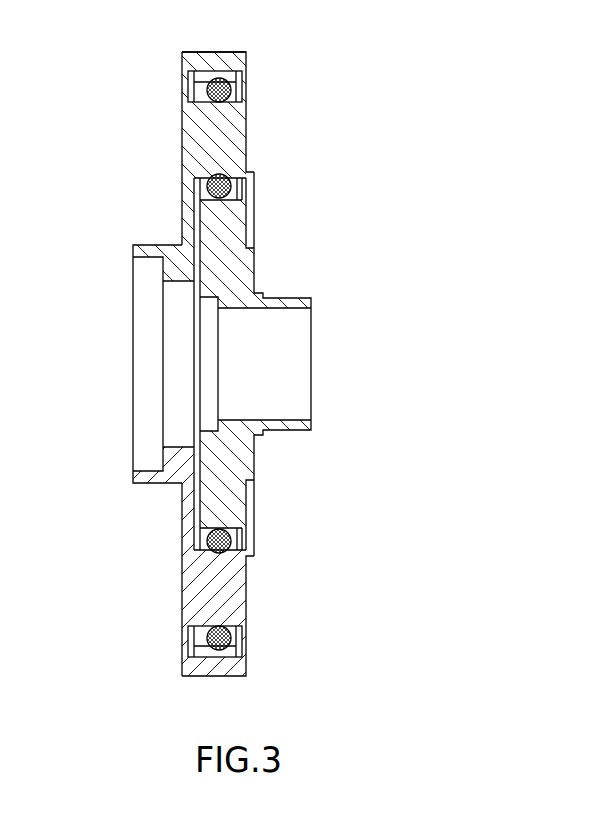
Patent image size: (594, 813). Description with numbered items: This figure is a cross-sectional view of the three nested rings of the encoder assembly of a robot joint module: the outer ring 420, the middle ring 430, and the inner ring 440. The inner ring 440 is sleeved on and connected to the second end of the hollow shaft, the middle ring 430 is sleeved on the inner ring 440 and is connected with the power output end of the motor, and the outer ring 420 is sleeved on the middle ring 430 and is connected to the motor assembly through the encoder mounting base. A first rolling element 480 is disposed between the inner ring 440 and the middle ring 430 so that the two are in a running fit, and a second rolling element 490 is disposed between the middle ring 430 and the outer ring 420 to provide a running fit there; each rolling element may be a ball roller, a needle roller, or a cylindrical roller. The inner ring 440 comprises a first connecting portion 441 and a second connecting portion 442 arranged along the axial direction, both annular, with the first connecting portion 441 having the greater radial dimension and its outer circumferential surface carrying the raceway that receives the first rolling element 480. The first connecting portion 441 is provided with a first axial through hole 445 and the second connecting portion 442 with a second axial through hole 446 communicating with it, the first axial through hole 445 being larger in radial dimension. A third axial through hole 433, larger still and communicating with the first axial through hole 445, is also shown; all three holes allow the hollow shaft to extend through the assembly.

The outer ring 420 is at (182, 67).
The middle ring 430 is at (182, 148).
The third axial through hole 433 is at (175, 303).
The inner ring 440 is at (386, 364).
The first connecting portion 441 is at (254, 262).
The second connecting portion 442 is at (311, 297).
The first axial through hole 445 is at (208, 357).
The second axial through hole 446 is at (263, 405).
The first rolling element 480 is at (250, 182).
The second rolling element 490 is at (247, 83).